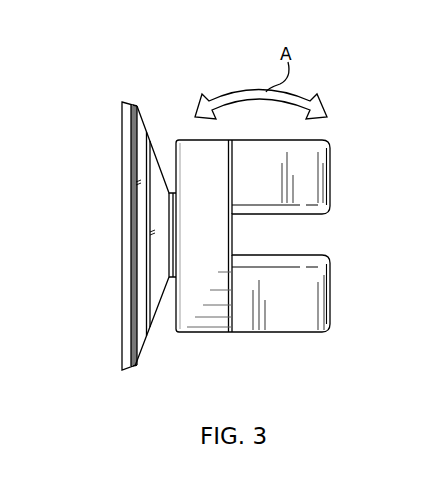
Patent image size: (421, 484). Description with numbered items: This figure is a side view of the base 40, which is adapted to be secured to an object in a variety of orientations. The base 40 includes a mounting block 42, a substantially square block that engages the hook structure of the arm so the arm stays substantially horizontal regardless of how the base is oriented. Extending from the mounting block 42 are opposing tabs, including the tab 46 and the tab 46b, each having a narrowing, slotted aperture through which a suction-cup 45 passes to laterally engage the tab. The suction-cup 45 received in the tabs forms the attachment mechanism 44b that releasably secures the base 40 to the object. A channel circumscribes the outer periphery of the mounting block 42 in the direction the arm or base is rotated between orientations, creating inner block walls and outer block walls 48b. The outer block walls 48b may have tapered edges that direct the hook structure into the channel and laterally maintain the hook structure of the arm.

The base 40 is at (241, 199).
The mounting block 42 is at (298, 231).
The attachment mechanism 44b is at (172, 100).
The suction-cup 45 is at (130, 313).
The tab 46 is at (420, 222).
The tab 46b is at (189, 300).
The outer block wall 48b is at (330, 197).